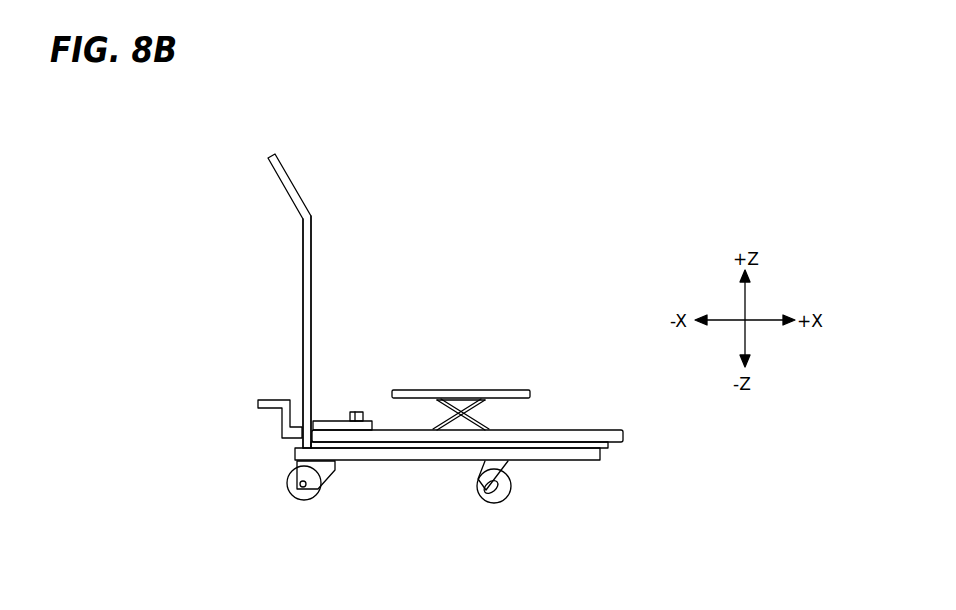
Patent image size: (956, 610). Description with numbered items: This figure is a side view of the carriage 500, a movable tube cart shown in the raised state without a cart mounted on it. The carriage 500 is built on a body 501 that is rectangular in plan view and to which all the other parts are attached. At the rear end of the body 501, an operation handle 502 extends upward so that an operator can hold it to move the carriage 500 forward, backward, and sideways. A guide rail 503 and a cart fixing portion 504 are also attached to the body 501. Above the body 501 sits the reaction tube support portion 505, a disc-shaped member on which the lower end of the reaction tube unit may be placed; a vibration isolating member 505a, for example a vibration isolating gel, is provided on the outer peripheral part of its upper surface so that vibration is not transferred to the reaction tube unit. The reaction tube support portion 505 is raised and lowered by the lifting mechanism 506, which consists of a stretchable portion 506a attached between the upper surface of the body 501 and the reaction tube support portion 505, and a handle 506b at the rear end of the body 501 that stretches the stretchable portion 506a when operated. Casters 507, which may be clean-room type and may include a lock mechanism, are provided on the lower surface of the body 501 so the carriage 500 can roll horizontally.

The carriage 500 is at (171, 110).
The body 501 is at (444, 459).
The operation handle 502 is at (287, 188).
The guide rail 503 is at (623, 437).
The cart fixing portion 504 is at (351, 422).
The reaction tube support portion 505 is at (458, 393).
The vibration isolating member 505a is at (525, 390).
The lifting mechanism 506 is at (182, 365).
The stretchable portion 506a is at (437, 402).
The handle 506b is at (258, 403).
The casters 507 is at (296, 499).